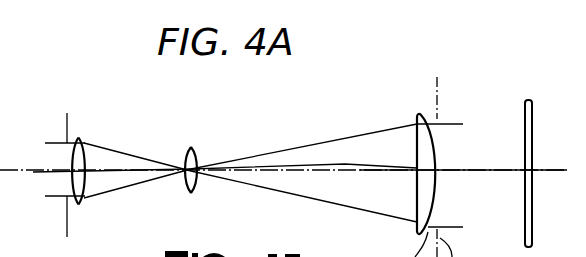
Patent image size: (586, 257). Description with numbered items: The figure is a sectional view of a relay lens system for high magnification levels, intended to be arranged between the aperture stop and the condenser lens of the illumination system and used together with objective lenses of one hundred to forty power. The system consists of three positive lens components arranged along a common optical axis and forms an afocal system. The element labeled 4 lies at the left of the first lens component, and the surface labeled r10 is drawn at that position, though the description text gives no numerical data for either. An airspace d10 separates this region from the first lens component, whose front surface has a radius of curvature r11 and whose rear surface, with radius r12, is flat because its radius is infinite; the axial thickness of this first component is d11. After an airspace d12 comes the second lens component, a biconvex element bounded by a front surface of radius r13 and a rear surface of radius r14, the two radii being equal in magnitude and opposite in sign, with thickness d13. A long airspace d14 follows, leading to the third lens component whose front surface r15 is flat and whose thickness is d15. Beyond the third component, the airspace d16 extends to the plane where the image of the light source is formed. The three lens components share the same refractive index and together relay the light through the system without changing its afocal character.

The fourth lens group / aperture plate 4 is at (67, 208).
The tenth refracting surface radius r10 is at (67, 226).
The radius of curvature of first lens surface r11 is at (79, 202).
The radius of curvature of second lens surface r12 is at (86, 199).
The radius of curvature of third lens surface r13 is at (186, 193).
The radius of curvature of fourth lens surface r14 is at (197, 190).
The radius of curvature of fifth lens surface r15 is at (417, 216).
The airspace d10 is at (68, 168).
The thickness of first lens d11 is at (85, 144).
The airspace d12 is at (133, 170).
The thickness of second lens d13 is at (192, 148).
The airspace d14 is at (277, 170).
The thickness of third lens d15 is at (421, 166).
The airspace d16 is at (437, 170).